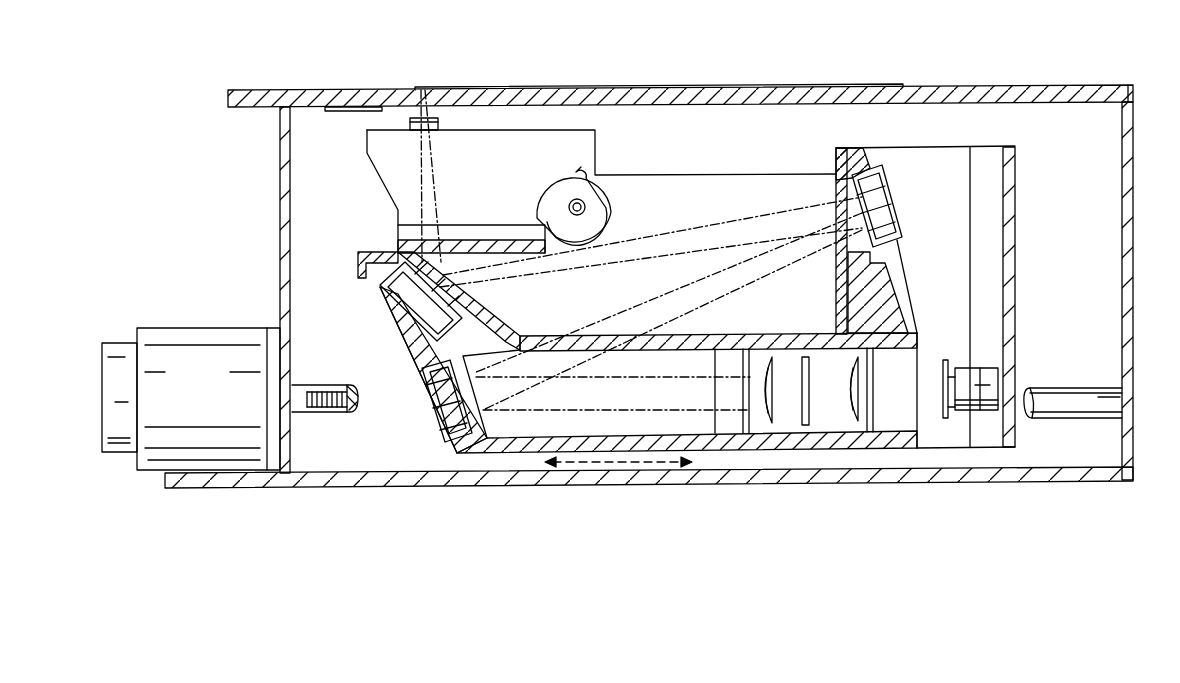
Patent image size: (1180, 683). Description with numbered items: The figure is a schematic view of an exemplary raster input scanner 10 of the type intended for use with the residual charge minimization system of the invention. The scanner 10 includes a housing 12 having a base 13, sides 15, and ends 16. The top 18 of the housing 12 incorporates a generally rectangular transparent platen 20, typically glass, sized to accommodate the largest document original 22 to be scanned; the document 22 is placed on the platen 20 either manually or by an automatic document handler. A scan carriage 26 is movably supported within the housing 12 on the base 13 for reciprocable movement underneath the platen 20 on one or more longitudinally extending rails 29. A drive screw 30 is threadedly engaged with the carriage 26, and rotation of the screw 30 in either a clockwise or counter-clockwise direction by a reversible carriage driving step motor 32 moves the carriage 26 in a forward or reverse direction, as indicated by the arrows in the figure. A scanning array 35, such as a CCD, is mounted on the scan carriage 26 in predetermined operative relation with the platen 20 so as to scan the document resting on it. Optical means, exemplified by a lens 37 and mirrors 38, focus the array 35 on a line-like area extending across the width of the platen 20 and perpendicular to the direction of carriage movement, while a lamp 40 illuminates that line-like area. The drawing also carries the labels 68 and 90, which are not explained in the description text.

The raster input scanner 10 is at (450, 42).
The housing 12 is at (232, 124).
The base 13 is at (427, 489).
The sides 15 is at (1085, 132).
The ends 16 is at (278, 225).
The top 18 is at (348, 94).
The platen 20 is at (702, 108).
The document original 22 is at (825, 85).
The scan carriage 26 is at (769, 136).
The rails 29 is at (1083, 393).
The drive screw 30 is at (338, 385).
The carriage driving step motor 32 is at (223, 328).
The scanning array 35 is at (951, 440).
The lens 37 is at (835, 402).
The mirrors 38 is at (890, 188).
The lamp 40 is at (600, 185).
The lamp socket nut 68 is at (447, 96).
The spacer block 90 is at (348, 110).